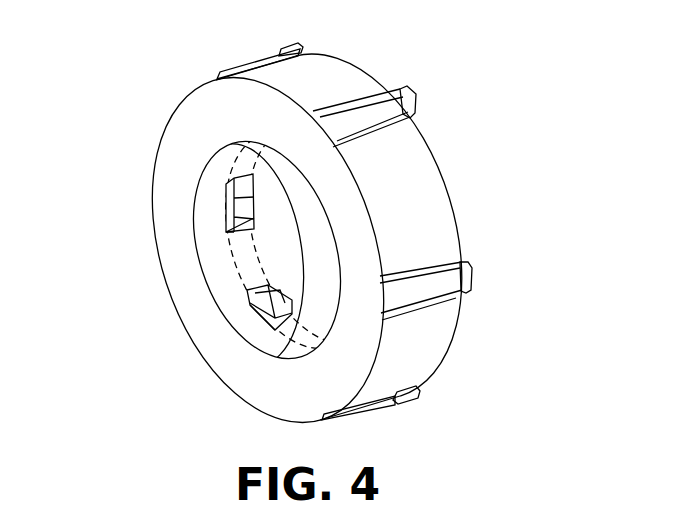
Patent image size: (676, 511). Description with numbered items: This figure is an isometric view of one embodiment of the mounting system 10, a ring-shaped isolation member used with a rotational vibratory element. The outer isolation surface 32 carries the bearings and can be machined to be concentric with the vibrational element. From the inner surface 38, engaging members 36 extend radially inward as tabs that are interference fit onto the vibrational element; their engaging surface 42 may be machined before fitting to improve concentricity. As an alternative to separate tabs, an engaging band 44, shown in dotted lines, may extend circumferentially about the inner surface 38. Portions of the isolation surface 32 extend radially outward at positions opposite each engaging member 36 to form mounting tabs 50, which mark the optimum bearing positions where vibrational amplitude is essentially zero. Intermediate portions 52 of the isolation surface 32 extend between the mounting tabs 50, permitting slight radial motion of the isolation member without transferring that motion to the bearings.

The mounting system 10 is at (484, 122).
The isolation surface 32 is at (338, 120).
The engaging member 36 is at (226, 207).
The inner surface 38 is at (256, 337).
The engaging surface 42 is at (247, 288).
The engaging band 44 is at (233, 163).
The mounting tab 50 is at (245, 64).
The intermediate portion 52 is at (421, 197).